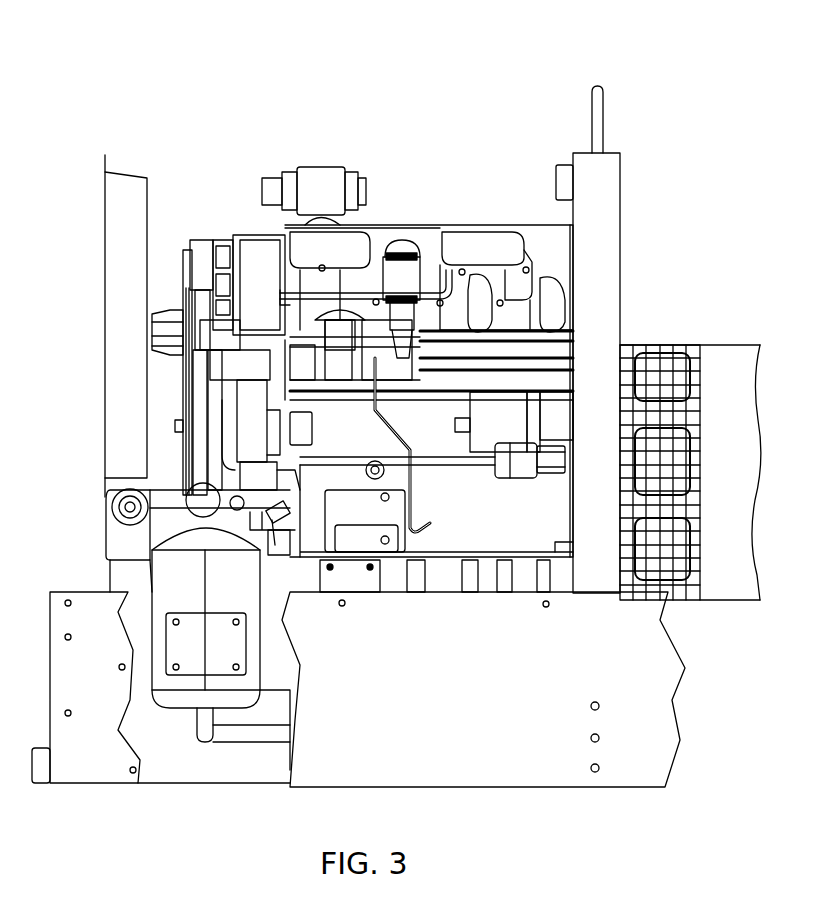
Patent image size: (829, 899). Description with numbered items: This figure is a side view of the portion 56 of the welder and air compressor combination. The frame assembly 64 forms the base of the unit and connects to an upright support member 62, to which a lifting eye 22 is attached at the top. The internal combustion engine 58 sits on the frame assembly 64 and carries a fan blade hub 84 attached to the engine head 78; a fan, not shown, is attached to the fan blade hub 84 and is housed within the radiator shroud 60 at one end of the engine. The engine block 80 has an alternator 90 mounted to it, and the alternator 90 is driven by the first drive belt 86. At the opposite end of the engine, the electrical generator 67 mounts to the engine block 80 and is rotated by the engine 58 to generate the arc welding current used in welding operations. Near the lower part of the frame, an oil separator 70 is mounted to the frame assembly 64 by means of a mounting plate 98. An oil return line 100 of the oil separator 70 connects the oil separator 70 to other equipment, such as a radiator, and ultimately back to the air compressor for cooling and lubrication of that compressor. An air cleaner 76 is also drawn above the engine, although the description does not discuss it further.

The lifting eye 22 is at (592, 104).
The portion 56 is at (142, 79).
The internal combustion engine 58 is at (446, 183).
The radiator shroud 60 is at (133, 216).
The support member 62 is at (608, 189).
The frame assembly 64 is at (484, 669).
The electrical generator 67 is at (733, 476).
The oil separator 70 is at (189, 574).
The air cleaner 76 is at (330, 194).
The engine head 78 is at (525, 315).
The engine block 80 is at (512, 516).
The fan blade hub 84 is at (162, 310).
The first drive belt 86 is at (193, 388).
The alternator 90 is at (263, 444).
The mounting plate 98 is at (220, 644).
The oil return line 100 is at (197, 727).